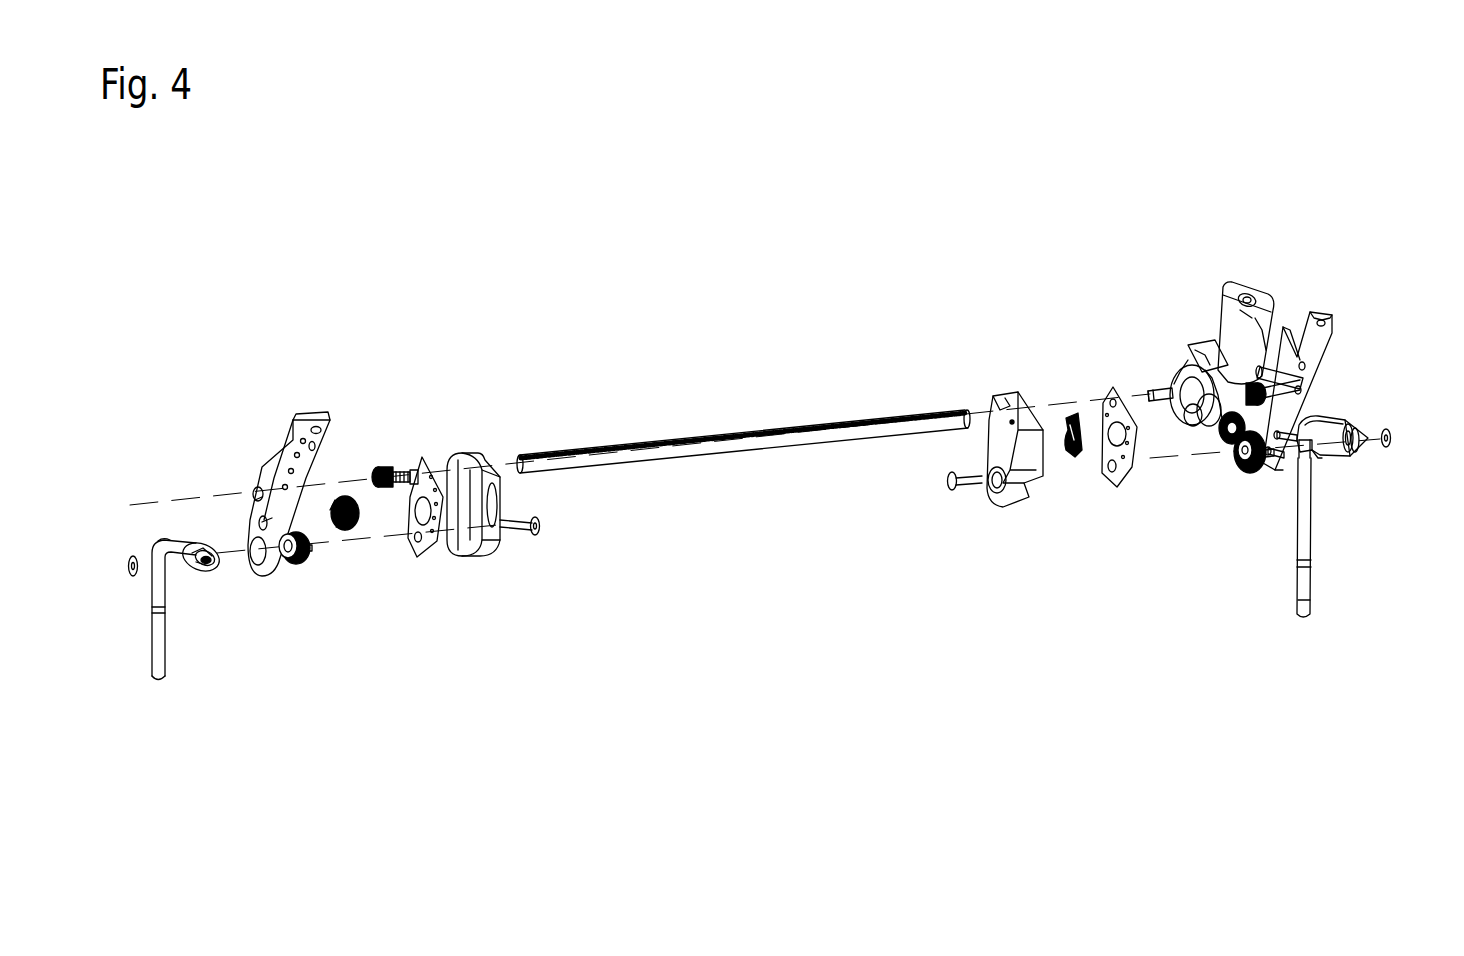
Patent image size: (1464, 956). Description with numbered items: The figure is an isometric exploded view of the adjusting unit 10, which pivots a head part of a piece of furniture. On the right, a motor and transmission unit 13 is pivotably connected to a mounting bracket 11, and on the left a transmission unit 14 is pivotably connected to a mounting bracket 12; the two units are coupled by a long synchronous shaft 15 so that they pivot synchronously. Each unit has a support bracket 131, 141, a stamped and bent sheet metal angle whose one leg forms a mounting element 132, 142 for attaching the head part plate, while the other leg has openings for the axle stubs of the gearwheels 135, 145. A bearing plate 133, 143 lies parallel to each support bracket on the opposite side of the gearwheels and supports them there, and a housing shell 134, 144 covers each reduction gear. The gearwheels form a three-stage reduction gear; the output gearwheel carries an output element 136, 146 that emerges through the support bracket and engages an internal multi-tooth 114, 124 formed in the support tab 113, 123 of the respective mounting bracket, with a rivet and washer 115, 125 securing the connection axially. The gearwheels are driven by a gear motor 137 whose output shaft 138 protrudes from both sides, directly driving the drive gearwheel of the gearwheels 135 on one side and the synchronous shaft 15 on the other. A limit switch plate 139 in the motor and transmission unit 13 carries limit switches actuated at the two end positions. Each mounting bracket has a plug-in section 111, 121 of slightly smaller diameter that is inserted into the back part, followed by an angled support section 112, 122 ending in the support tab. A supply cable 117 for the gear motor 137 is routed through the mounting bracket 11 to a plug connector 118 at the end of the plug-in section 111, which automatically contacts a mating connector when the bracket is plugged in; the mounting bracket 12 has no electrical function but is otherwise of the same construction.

The adjusting unit 10 is at (895, 302).
The mounting bracket 11 is at (1379, 535).
The mounting bracket 12 is at (180, 608).
The motor and transmission unit 13 is at (1325, 285).
The transmission unit 14 is at (487, 345).
The synchronous shaft 15 is at (763, 430).
The plug-in section 111 is at (1304, 536).
The support section 112 is at (1307, 430).
The support tab 113 is at (1364, 425).
The internal multi-tooth 114 is at (1353, 453).
The rivet and washer 115 is at (962, 500).
The supply cable 117 is at (1321, 455).
The plug connector 118 is at (1306, 598).
The plug-in section 121 is at (151, 626).
The support section 122 is at (158, 542).
The support tab 123 is at (206, 576).
The internal multi-tooth 124 is at (195, 552).
The rivet and washer 125 is at (129, 568).
The support bracket 131 is at (1312, 404).
The mounting element 132 is at (1326, 320).
The bearing plate 133 is at (1112, 477).
The housing shell 134 is at (1016, 492).
The gearwheels 135 is at (1257, 394).
The output element 136 is at (1252, 468).
The gear motor 137 is at (1190, 345).
The output shaft 138 is at (1158, 393).
The limit switch plate 139 is at (1075, 457).
The support bracket 141 is at (268, 478).
The mounting element 142 is at (305, 420).
The bearing plate 143 is at (413, 553).
The housing shell 144 is at (470, 540).
The gearwheels 145 is at (305, 565).
The output element 146 is at (286, 575).